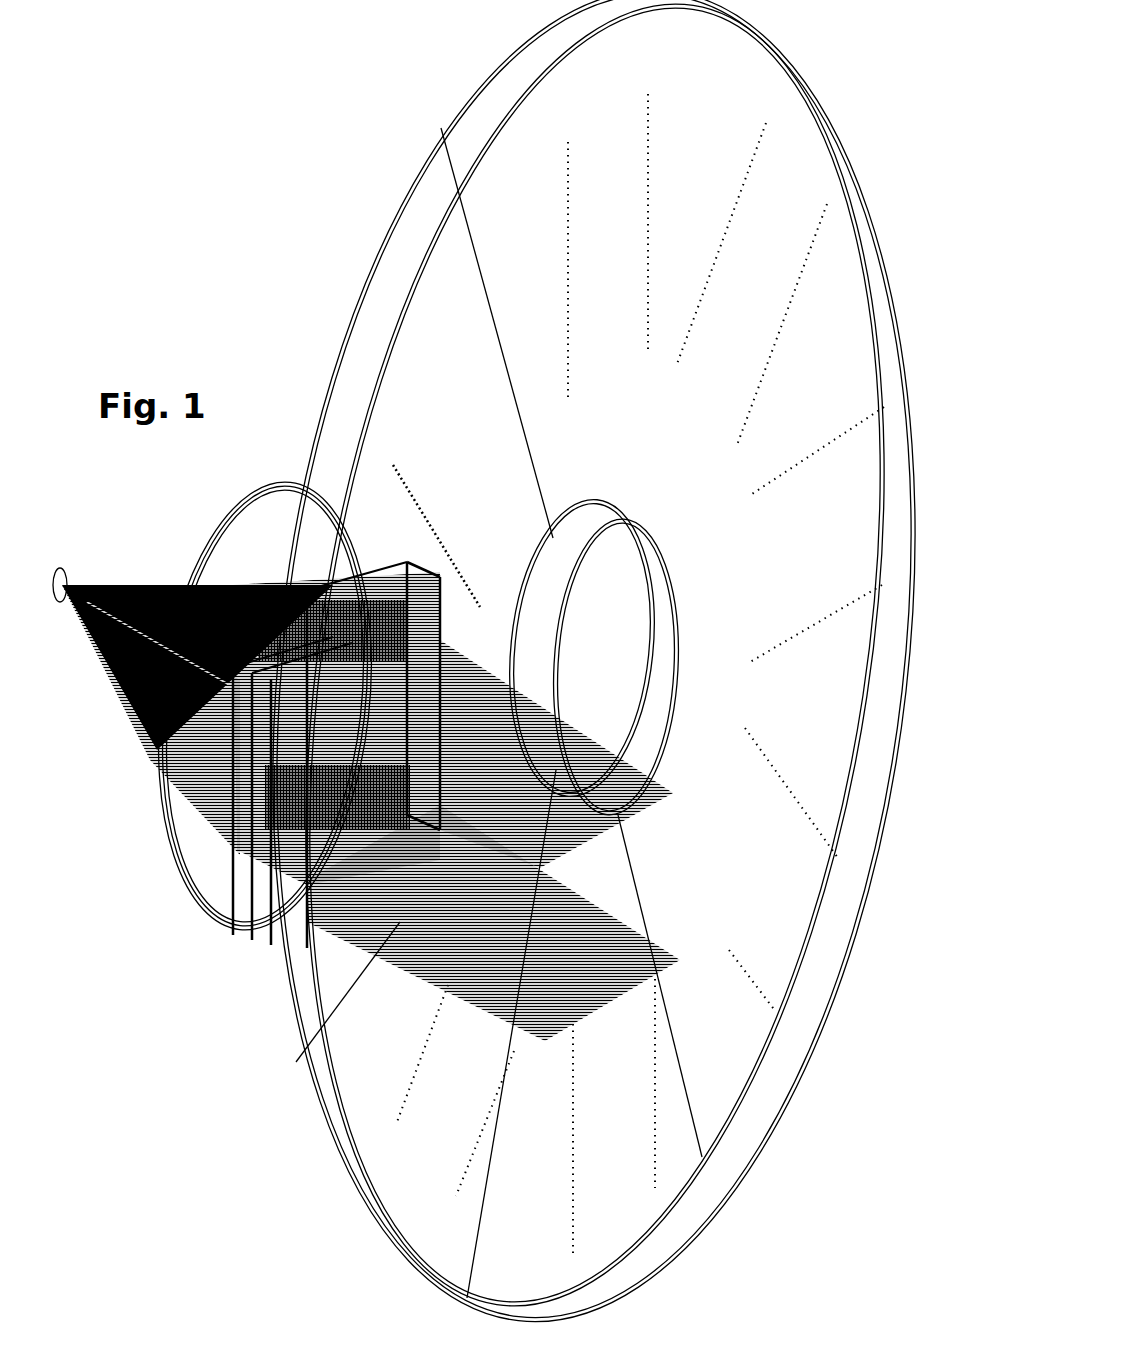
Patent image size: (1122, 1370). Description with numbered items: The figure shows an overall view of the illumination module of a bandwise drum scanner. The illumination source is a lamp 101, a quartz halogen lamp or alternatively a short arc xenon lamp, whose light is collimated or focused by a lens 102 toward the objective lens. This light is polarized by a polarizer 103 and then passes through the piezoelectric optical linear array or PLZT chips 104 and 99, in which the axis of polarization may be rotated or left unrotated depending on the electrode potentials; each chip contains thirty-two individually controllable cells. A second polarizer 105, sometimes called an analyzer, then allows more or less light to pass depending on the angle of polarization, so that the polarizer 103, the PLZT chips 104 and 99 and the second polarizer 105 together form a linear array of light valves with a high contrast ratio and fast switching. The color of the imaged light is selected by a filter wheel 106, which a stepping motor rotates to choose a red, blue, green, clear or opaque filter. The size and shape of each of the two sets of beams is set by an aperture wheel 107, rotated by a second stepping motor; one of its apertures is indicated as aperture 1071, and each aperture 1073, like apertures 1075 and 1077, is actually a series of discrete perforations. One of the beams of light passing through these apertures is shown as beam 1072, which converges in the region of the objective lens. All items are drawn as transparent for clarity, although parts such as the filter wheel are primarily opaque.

The PLZT chip 99 is at (283, 824).
The lamp 101 is at (193, 673).
The lens 102 is at (265, 691).
The polarizer 103 is at (314, 771).
The PLZT chip 104 is at (426, 683).
The second polarizer 105 is at (326, 801).
The filter wheel 106 is at (595, 673).
The aperture wheel 107 is at (593, 678).
The aperture 1071 is at (400, 601).
The beam of light 1072 is at (519, 840).
The aperture 1073 is at (388, 744).
The aperture 1075 is at (411, 1053).
The aperture 1077 is at (466, 1123).